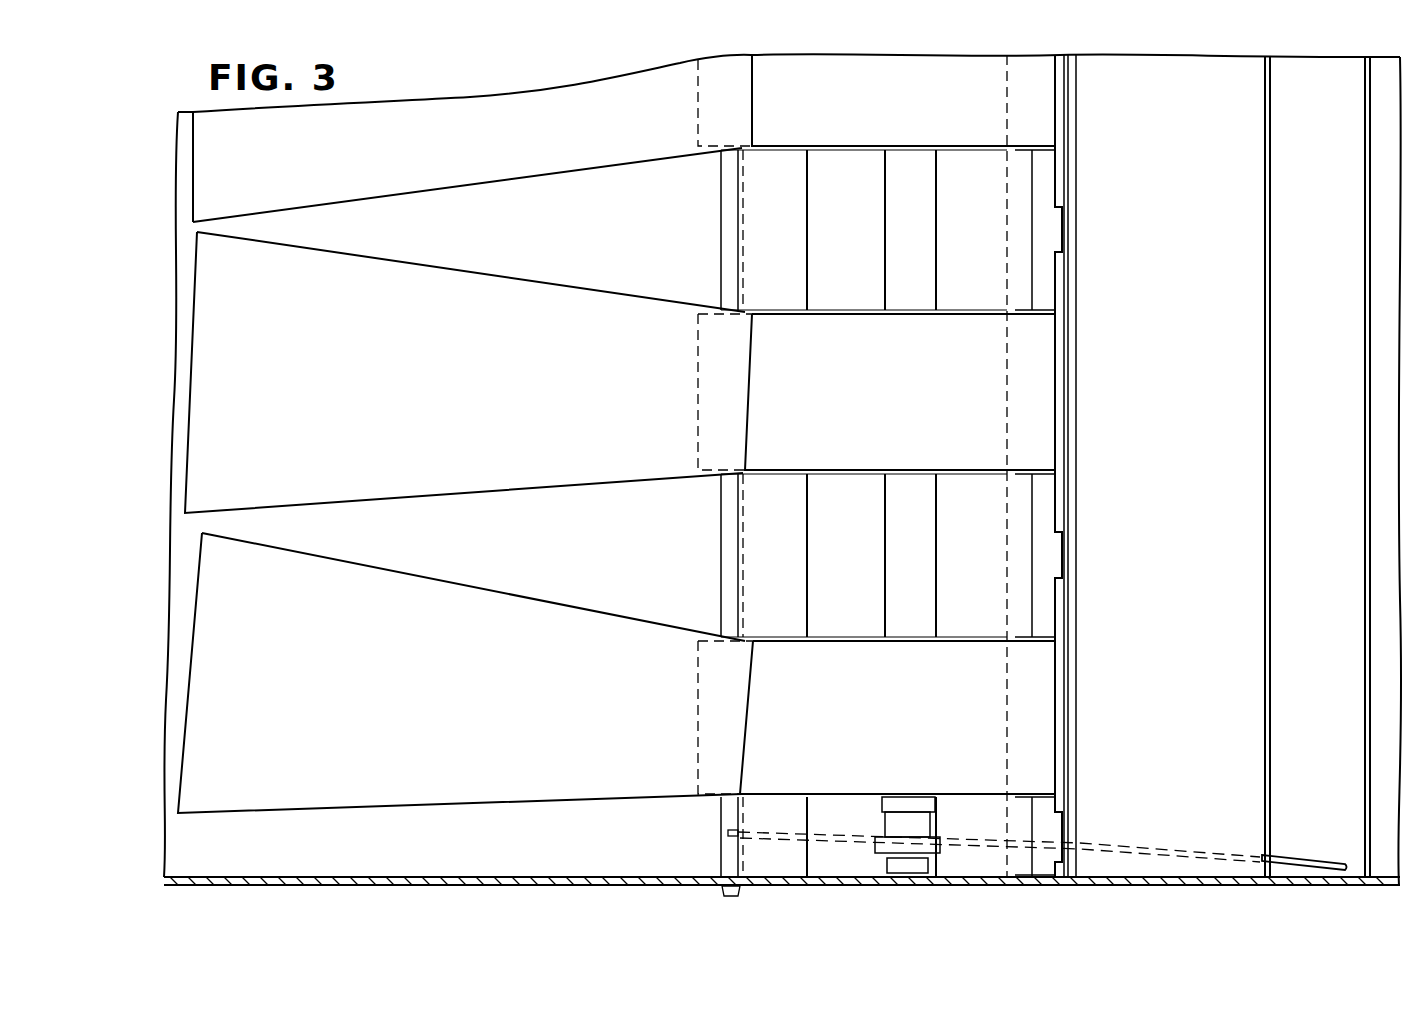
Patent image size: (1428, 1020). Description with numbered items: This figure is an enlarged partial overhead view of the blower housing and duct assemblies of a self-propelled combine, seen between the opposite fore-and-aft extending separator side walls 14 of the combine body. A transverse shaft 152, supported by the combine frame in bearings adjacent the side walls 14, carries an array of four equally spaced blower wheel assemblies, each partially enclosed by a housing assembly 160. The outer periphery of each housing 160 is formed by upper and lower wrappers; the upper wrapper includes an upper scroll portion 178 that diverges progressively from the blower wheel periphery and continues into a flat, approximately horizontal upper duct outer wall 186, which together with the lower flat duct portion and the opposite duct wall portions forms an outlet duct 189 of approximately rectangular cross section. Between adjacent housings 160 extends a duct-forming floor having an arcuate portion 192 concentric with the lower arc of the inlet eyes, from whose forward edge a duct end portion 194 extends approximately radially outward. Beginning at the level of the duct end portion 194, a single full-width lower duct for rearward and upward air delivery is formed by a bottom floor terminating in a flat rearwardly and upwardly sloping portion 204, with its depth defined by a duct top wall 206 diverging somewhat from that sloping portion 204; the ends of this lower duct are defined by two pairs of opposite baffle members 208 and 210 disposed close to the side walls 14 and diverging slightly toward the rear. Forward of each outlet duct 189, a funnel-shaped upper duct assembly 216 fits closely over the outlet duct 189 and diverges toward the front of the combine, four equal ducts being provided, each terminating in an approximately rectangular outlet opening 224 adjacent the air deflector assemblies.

The separator side wall 14 is at (616, 881).
The outlet opening 224 is at (192, 163).
The upper duct assembly 216 is at (582, 175).
The outlet duct 189 is at (698, 102).
The housing assembly 160 is at (960, 153).
The shaft 152 is at (897, 528).
The duct end portion 194 is at (790, 548).
The arcuate portion 192 is at (855, 608).
The upper duct outer wall 186 is at (824, 692).
The upper scroll portion 178 is at (980, 704).
The baffle member 208 is at (767, 838).
The baffle member 210 is at (1102, 852).
The duct top wall 206 is at (1188, 432).
The flat rearwardly and upwardly sloping portion 204 is at (1357, 444).